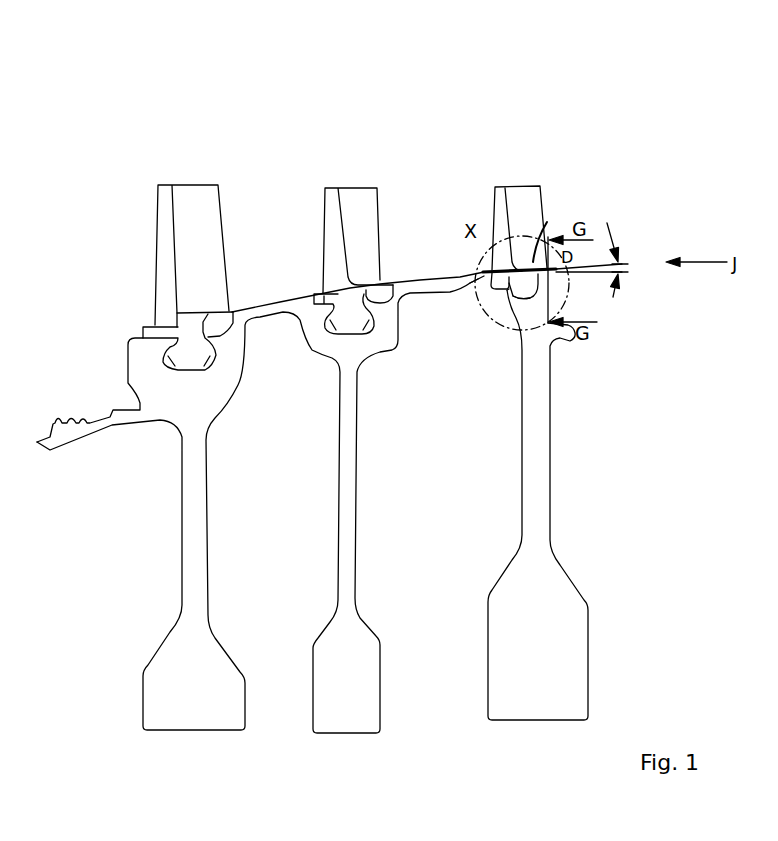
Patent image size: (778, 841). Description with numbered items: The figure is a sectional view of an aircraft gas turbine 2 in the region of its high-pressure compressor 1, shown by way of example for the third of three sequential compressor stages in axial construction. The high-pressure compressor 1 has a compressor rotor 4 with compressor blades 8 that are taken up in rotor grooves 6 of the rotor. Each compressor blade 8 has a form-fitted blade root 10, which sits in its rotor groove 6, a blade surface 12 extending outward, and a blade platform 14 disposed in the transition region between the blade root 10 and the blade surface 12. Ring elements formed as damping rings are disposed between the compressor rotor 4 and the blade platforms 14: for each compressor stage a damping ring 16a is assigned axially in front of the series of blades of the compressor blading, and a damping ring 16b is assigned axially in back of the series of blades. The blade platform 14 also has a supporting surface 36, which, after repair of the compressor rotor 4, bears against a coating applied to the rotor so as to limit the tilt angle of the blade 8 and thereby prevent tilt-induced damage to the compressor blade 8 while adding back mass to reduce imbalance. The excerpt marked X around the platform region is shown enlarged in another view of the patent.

The high-pressure compressor 1 is at (602, 92).
The aircraft gas turbine 2 is at (578, 442).
The compressor rotor 4 is at (538, 375).
The rotor groove 6 is at (504, 315).
The compressor blade 8 is at (540, 186).
The blade root 10 is at (497, 304).
The blade surface 12 is at (485, 211).
The blade platform 14 is at (477, 263).
The damping ring 16a is at (489, 281).
The damping ring 16b is at (551, 283).
The supporting surface 36 is at (535, 265).